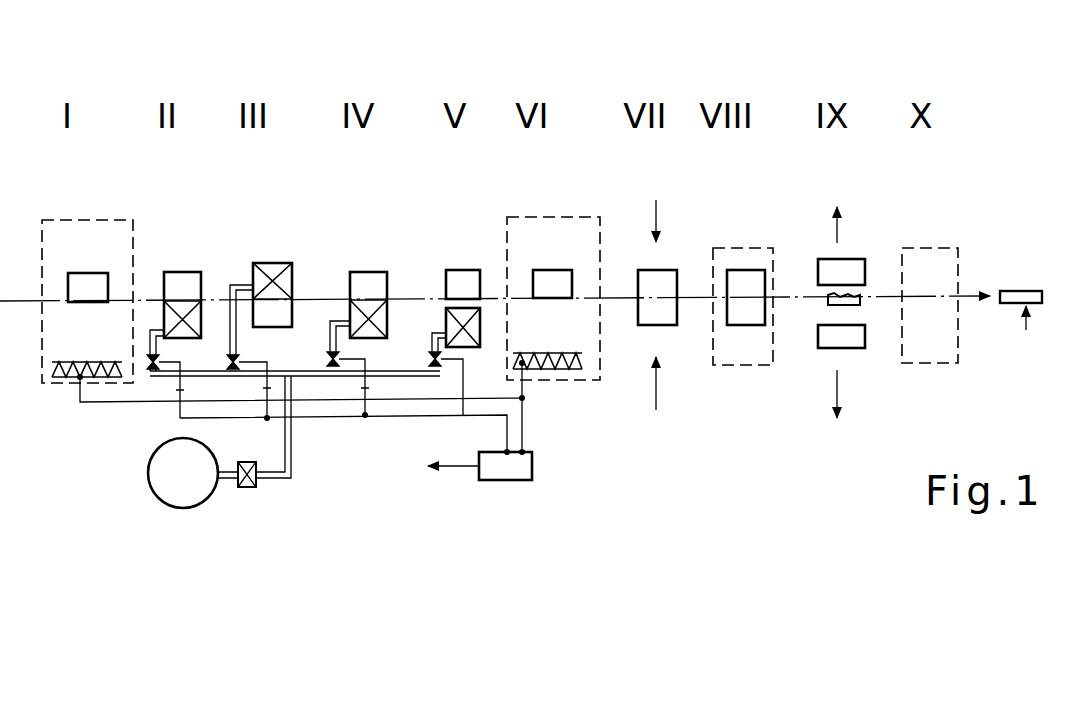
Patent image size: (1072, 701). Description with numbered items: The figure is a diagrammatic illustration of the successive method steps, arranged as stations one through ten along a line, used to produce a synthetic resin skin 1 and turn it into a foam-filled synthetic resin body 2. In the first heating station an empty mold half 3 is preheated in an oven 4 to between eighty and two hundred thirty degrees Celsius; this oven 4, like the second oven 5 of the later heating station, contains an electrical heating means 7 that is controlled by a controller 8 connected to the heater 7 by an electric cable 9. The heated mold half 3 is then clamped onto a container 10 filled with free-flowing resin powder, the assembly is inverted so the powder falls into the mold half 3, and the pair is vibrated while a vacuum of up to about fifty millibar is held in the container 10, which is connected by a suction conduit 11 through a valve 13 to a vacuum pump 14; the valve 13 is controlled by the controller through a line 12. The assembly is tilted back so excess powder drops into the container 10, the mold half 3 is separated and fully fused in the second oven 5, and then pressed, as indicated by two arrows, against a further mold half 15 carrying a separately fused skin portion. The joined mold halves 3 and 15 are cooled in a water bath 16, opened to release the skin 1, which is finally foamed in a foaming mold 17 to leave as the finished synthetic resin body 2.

The synthetic resin skin 1 is at (859, 306).
The synthetic resin body 2 is at (1033, 337).
The mold half 3 is at (75, 288).
The oven 4 is at (41, 222).
The second oven 5 is at (584, 215).
The electrical heating means 7 is at (63, 378).
The controller 8 is at (502, 470).
The electric cable 9 is at (524, 420).
The container 10 is at (271, 268).
The suction conduit 11 is at (152, 328).
The line 12 is at (385, 418).
The valve 13 is at (243, 362).
The vacuum pump 14 is at (187, 490).
The mold half 15 is at (662, 326).
The water bath 16 is at (724, 246).
The foaming mold 17 is at (922, 268).